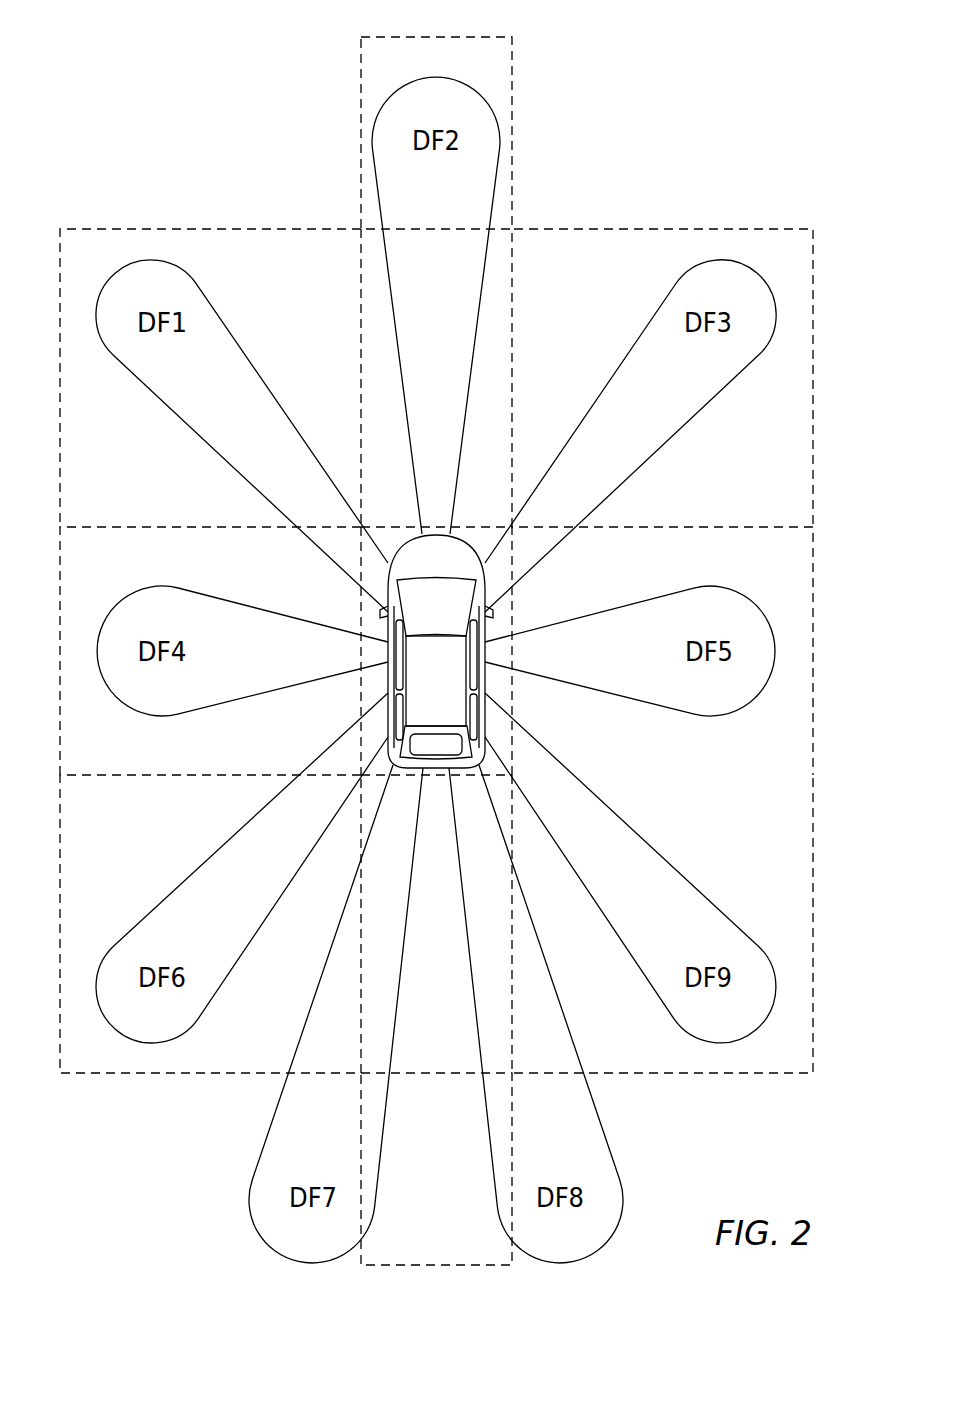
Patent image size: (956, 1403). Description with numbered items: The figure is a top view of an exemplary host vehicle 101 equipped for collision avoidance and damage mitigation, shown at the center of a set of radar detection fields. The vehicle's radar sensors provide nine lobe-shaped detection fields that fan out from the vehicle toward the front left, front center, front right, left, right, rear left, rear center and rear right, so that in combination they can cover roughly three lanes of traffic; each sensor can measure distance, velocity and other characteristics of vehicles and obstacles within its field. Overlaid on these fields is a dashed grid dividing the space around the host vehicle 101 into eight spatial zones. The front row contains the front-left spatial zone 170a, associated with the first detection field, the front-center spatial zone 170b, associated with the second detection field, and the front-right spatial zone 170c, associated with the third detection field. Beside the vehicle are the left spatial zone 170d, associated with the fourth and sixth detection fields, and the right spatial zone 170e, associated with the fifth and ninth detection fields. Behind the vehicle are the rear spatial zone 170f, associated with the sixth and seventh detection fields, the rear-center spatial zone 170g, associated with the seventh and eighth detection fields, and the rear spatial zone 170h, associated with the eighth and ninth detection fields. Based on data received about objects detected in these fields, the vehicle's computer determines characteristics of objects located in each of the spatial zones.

The host vehicle 101 is at (442, 692).
The spatial zone 170a is at (310, 282).
The spatial zone 170b is at (440, 71).
The spatial zone 170c is at (565, 282).
The spatial zone 170d is at (105, 569).
The spatial zone 170e is at (768, 569).
The spatial zone 170f is at (107, 824).
The spatial zone 170g is at (438, 1240).
The spatial zone 170h is at (768, 824).